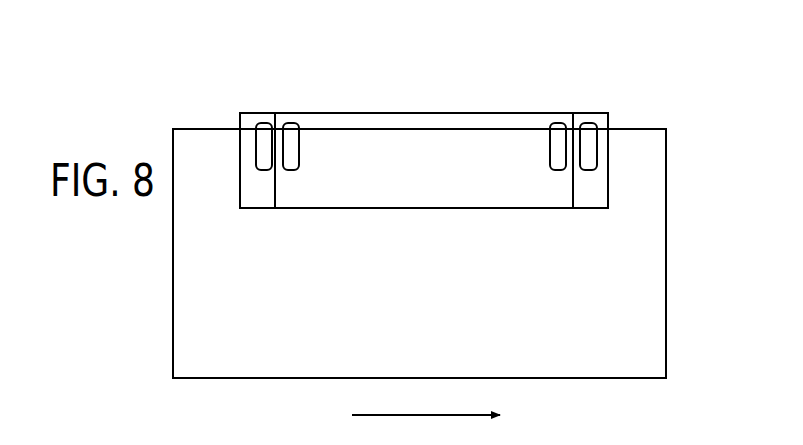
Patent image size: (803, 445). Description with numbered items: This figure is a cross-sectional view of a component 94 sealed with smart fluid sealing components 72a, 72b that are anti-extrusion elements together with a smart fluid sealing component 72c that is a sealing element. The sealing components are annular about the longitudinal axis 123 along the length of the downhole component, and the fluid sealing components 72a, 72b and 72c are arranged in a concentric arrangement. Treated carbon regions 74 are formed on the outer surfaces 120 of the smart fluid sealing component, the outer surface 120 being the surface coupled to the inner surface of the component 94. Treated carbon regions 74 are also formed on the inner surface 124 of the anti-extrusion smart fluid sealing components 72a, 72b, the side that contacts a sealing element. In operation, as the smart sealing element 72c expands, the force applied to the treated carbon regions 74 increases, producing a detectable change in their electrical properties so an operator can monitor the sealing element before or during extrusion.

The component 94 is at (667, 317).
The smart fluid sealing component 72a is at (249, 109).
The smart fluid sealing component 72b is at (616, 111).
The smart fluid sealing component 72c is at (419, 109).
The treated carbon regions 74 is at (291, 123).
The outer surface 120 is at (283, 186).
The inner surface 124 is at (270, 188).
The longitudinal axis 123 is at (418, 415).